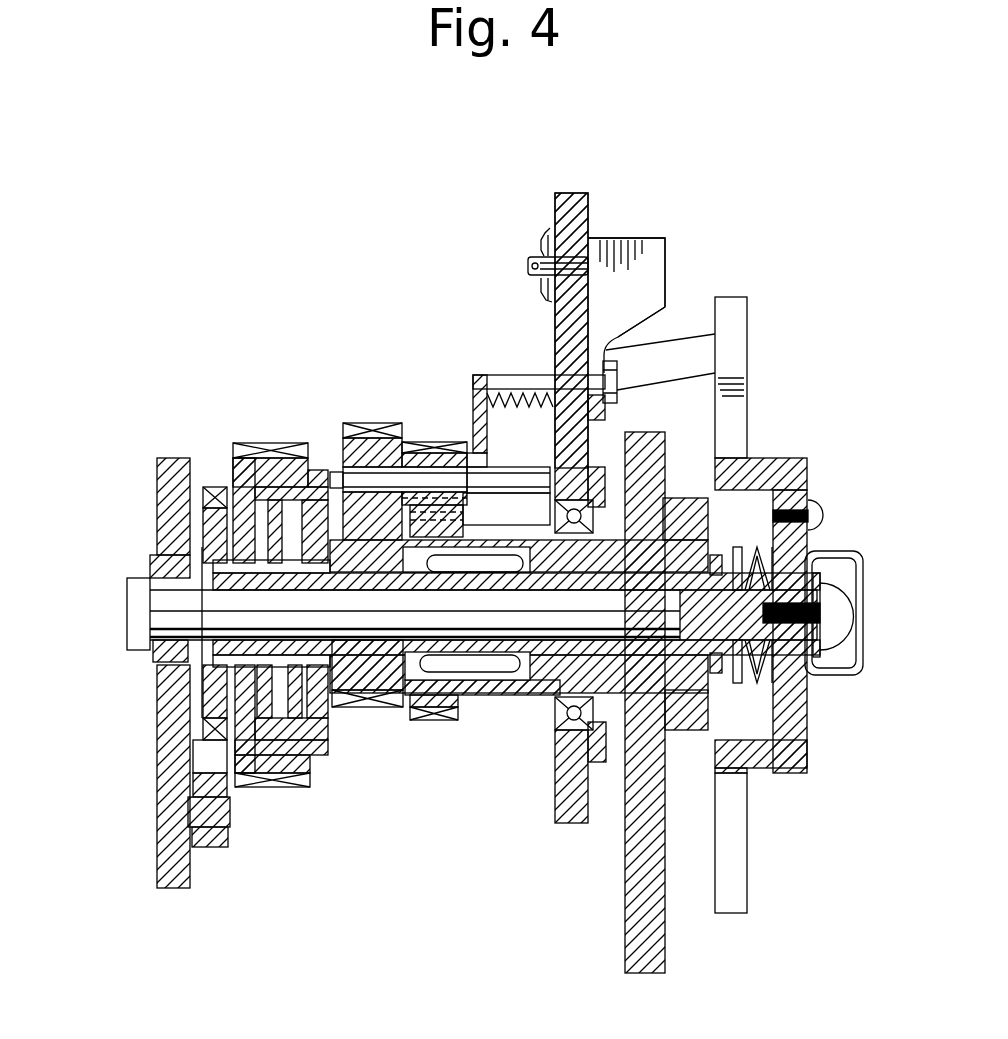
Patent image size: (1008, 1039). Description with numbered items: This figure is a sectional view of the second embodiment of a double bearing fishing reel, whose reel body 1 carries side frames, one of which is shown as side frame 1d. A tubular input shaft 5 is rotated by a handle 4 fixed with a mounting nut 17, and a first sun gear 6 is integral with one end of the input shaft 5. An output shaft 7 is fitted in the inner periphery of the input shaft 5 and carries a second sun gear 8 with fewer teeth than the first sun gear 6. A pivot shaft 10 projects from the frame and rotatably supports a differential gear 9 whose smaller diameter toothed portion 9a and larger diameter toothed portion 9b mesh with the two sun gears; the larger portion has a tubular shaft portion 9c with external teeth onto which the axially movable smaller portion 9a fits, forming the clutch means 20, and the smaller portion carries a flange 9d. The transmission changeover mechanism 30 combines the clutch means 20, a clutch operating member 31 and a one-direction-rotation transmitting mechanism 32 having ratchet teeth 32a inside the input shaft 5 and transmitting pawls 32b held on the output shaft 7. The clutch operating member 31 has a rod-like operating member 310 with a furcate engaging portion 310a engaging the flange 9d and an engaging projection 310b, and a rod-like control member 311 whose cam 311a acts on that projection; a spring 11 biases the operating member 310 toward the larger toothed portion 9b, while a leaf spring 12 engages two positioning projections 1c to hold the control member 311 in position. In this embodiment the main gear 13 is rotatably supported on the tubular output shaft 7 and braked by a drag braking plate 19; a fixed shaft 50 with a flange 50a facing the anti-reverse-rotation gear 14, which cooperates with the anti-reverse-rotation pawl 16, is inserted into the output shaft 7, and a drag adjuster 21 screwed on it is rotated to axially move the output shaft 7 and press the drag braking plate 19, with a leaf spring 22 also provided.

The reel body 1 is at (568, 190).
The frame side plate 1d is at (158, 478).
The positioning projections 1c is at (543, 240).
The leaf spring 12 is at (530, 262).
The handle 4 is at (660, 948).
The input shaft 5 is at (700, 553).
The first sun gear 6 is at (420, 718).
The output shaft 7 is at (667, 570).
The second sun gear 8 is at (360, 708).
The differential gear 9 is at (357, 422).
The smaller diameter toothed portion 9a is at (420, 443).
The larger diameter toothed portion 9b is at (355, 424).
The tubular shaft portion 9c is at (432, 452).
The flange 9d is at (468, 432).
The pivot shaft 10 is at (526, 468).
The spring 11 is at (590, 420).
The main gear 13 is at (275, 442).
The anti-reverse-rotation gear 14 is at (203, 530).
The anti-reverse-rotation pawl 16 is at (195, 755).
The mounting nut 17 is at (700, 713).
The drag braking plate 19 is at (240, 470).
The clutch means 20 is at (440, 460).
The drag adjuster 21 is at (807, 470).
The leaf spring 22 is at (765, 552).
The transmission changeover mechanism 30 is at (645, 350).
The clutch operating member 31 is at (678, 272).
The one-direction-rotation transmitting mechanism 32 is at (480, 665).
The ratchet teeth 32a is at (427, 672).
The transmitting pawls 32b is at (455, 672).
The fixed shaft 50 is at (128, 613).
The flange 50a is at (160, 560).
The operating member 310 is at (522, 376).
The furcate engaging portion 310a is at (480, 375).
The engaging projection 310b is at (620, 380).
The control member 311 is at (662, 250).
The cam 311a is at (648, 322).